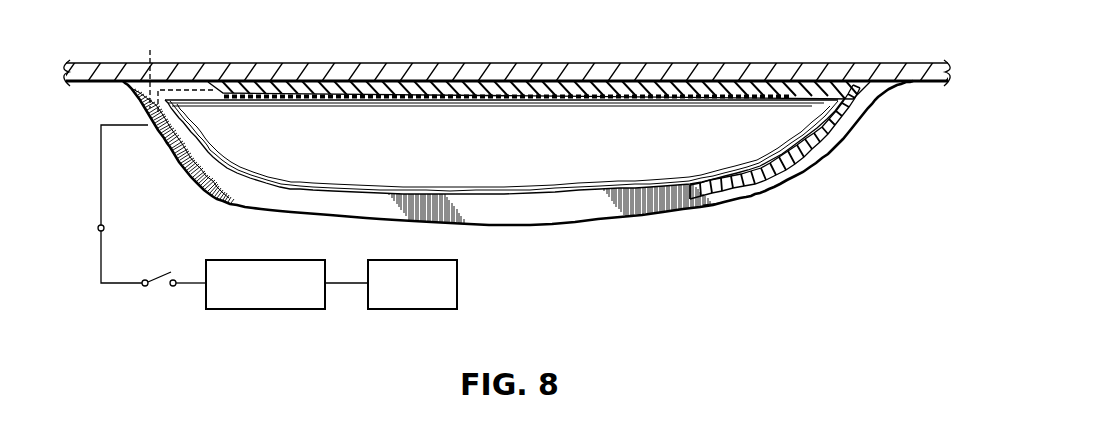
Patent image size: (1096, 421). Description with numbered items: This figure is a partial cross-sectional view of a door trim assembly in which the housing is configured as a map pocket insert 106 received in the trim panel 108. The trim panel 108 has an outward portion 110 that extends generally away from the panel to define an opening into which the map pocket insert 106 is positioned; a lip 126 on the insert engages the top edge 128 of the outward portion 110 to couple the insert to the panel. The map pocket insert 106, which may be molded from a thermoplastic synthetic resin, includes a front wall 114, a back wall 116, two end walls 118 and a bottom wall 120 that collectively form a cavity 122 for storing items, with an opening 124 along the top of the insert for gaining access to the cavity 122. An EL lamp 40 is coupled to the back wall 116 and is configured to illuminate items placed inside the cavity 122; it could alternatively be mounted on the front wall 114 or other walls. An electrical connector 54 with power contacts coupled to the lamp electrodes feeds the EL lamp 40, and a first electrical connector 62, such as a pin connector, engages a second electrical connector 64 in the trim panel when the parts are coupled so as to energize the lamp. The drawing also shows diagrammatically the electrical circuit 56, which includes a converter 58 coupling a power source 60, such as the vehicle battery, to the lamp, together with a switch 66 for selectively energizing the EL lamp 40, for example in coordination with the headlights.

The EL lamp 40 is at (462, 97).
The electrical connector 54 is at (233, 88).
The electrical circuit 56 is at (329, 352).
The converter 58 is at (230, 310).
The power source 60 is at (394, 310).
The first electrical connector 62 is at (177, 73).
The second electrical connector 64 is at (104, 226).
The switch 66 is at (160, 277).
The map pocket insert 106 is at (201, 192).
The trim panel 108 is at (911, 72).
The outward portion 110 is at (813, 177).
The front wall 114 is at (777, 184).
The back wall 116 is at (790, 80).
The end walls 118 is at (849, 134).
The bottom wall 120 is at (352, 157).
The cavity 122 is at (504, 146).
The opening 124 is at (664, 192).
The lip 126 is at (547, 218).
The top edge 128 is at (726, 201).